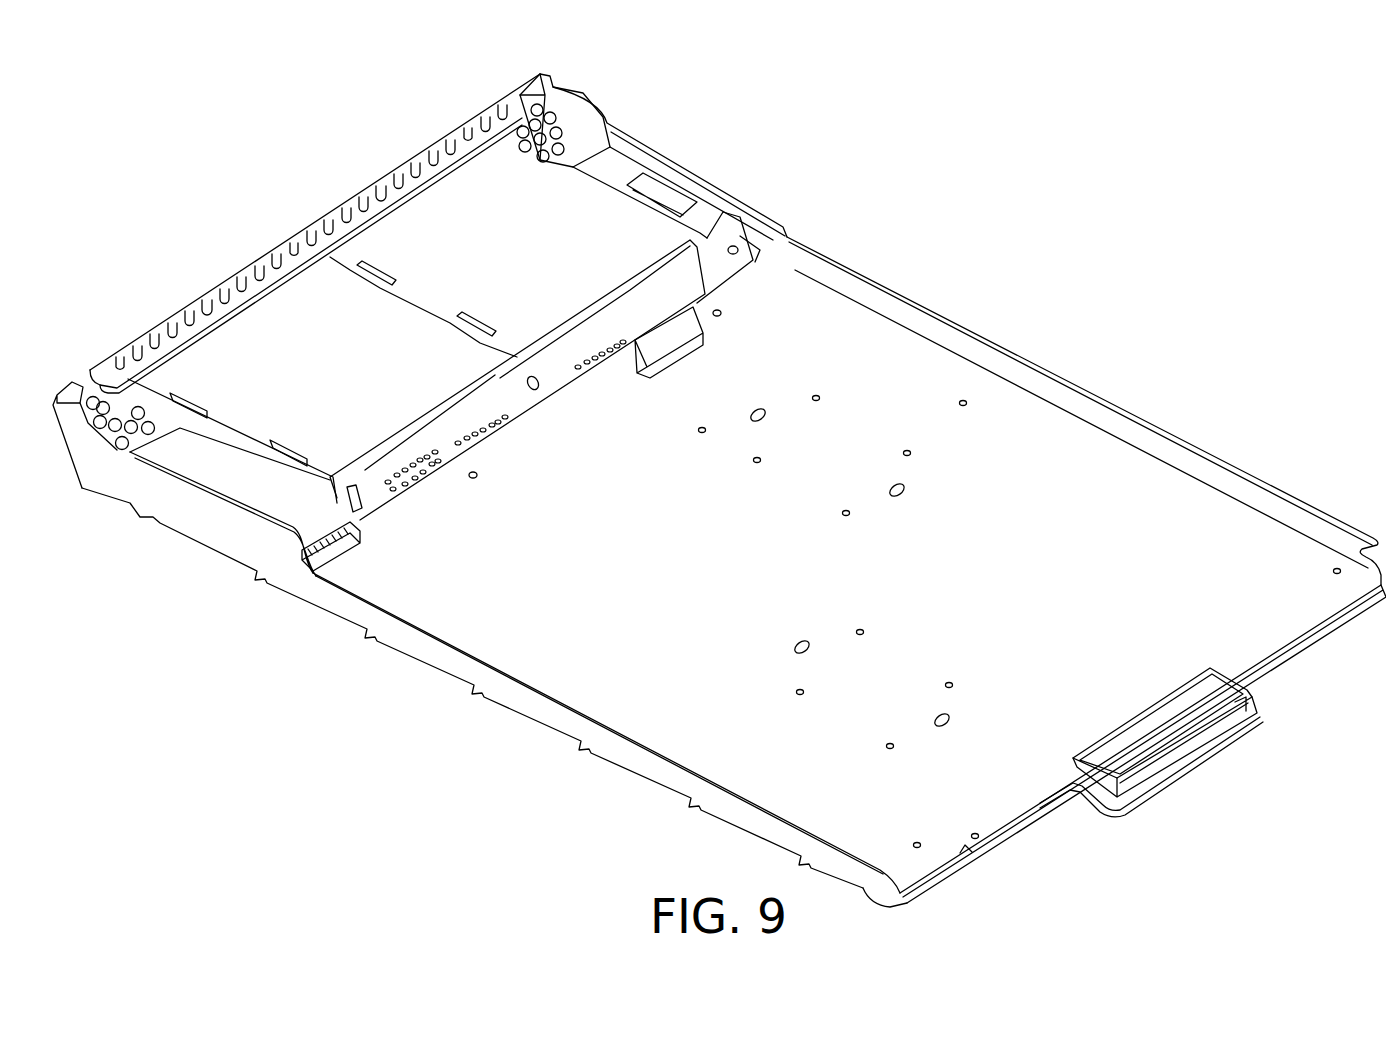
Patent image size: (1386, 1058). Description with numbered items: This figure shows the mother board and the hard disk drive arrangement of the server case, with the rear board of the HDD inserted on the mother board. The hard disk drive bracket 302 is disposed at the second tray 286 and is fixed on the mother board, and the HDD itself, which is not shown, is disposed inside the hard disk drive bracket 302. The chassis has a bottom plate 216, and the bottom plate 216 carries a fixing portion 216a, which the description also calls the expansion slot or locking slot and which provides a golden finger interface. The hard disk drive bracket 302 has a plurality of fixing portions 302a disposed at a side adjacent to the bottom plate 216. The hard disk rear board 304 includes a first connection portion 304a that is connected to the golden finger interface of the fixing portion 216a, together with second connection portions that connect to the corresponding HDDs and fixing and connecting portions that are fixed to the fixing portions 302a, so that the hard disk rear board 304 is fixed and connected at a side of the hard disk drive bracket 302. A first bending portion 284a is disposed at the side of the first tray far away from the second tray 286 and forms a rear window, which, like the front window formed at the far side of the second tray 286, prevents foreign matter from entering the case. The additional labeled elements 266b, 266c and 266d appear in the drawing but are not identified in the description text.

The hard disk drive bracket 302 is at (623, 223).
The fixing portions 302a is at (337, 520).
The hard disk rear board 304 is at (733, 250).
The first connection portion 304a is at (670, 310).
The side wall 266b is at (447, 440).
The wall portion 266c is at (753, 250).
The wall tab 266d is at (350, 500).
The first bending portion 284a is at (118, 440).
The bottom plate 216 is at (870, 347).
The fixing portion 216a is at (687, 333).
The second tray 286 is at (1040, 377).